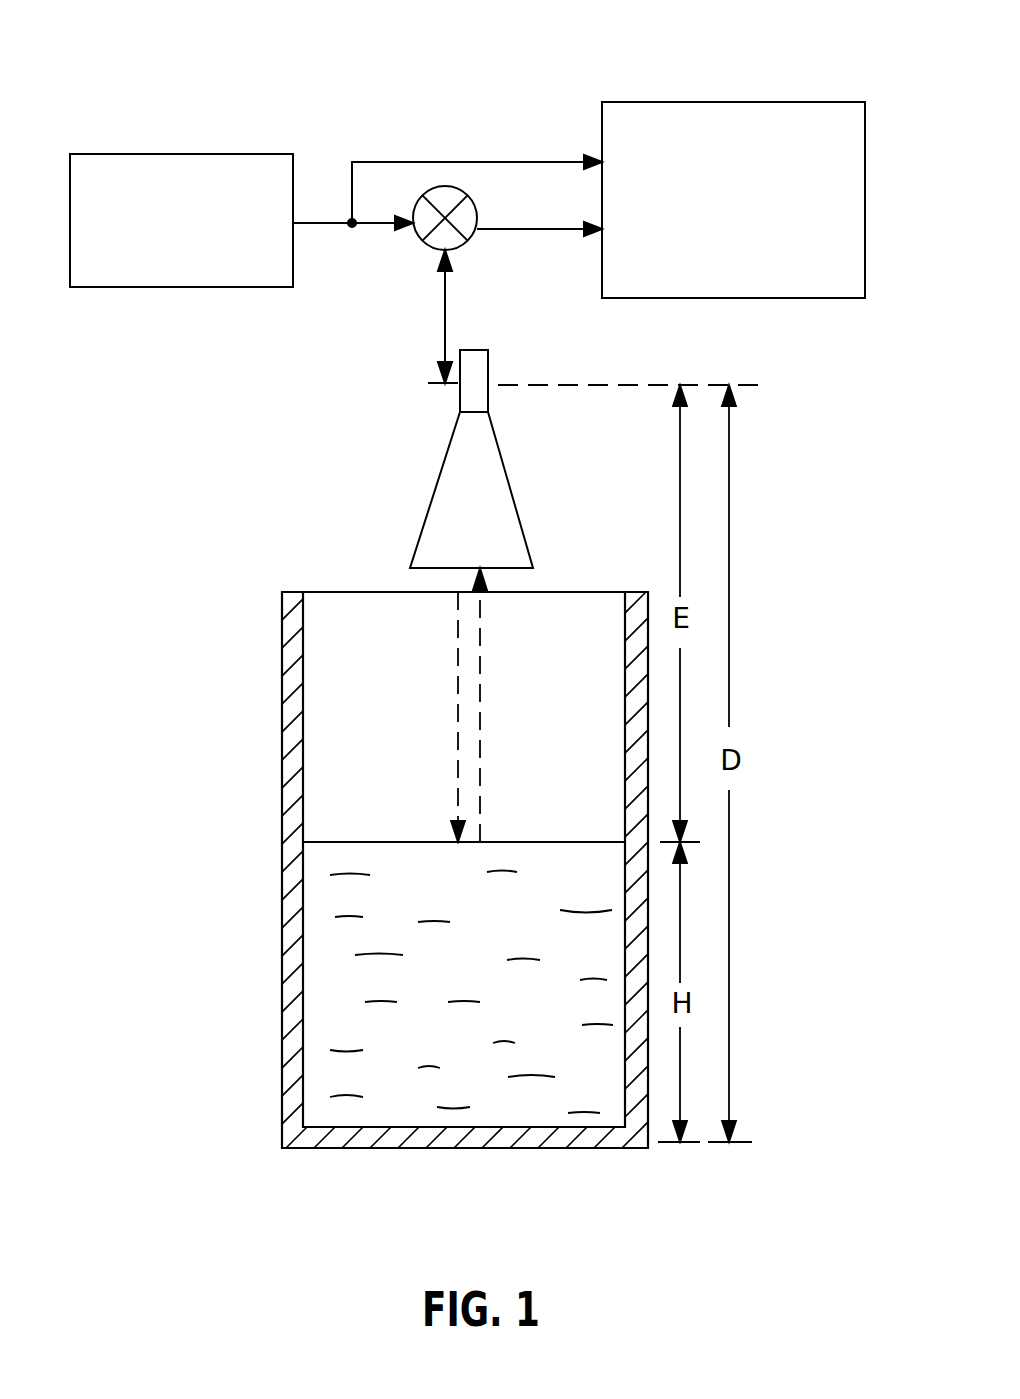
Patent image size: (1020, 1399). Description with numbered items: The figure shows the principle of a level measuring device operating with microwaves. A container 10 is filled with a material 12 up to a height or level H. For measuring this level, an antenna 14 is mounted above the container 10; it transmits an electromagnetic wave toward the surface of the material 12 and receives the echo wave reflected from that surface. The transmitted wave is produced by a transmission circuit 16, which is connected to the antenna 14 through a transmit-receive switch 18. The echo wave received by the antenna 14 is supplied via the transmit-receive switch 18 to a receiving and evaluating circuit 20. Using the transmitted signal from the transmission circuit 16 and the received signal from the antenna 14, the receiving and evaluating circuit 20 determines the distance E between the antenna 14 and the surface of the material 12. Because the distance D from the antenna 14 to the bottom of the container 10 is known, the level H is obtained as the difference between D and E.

The container 10 is at (293, 745).
The material 12 is at (322, 978).
The antenna 14 is at (457, 507).
The transmission circuit 16 is at (195, 163).
The transmit-receive switch 18 is at (420, 236).
The receiving and evaluating circuit 20 is at (740, 113).